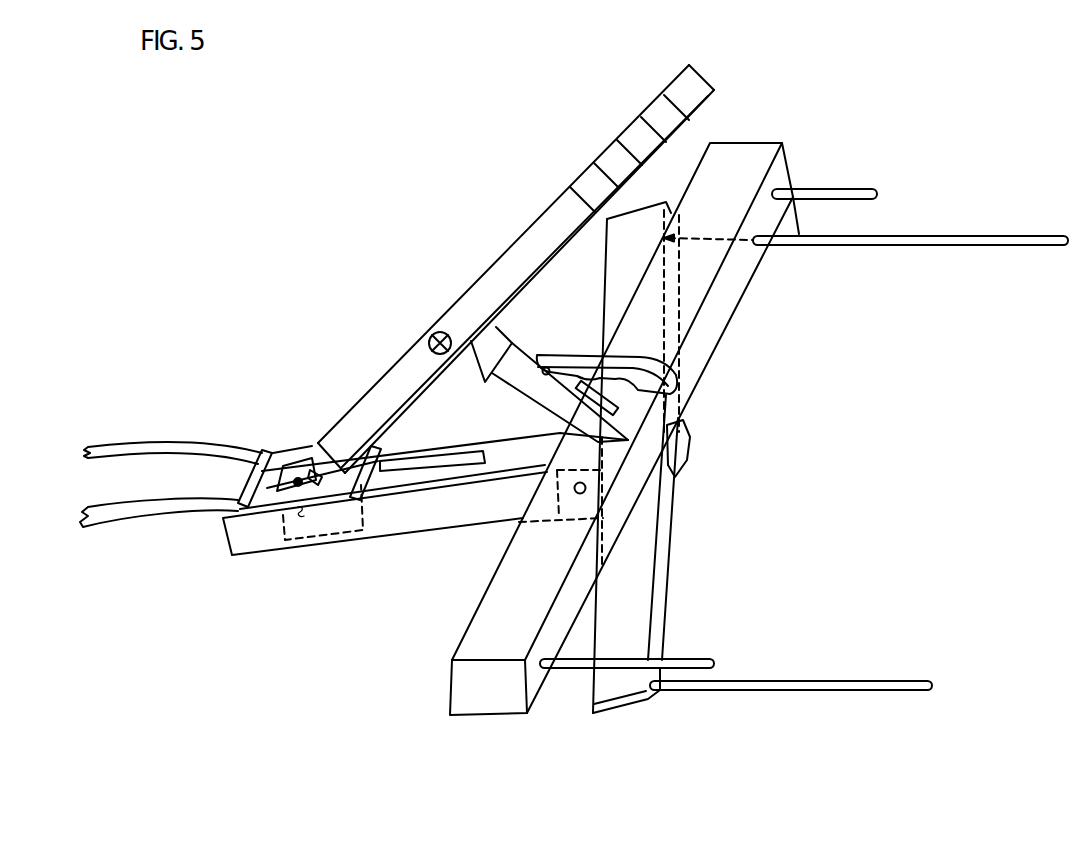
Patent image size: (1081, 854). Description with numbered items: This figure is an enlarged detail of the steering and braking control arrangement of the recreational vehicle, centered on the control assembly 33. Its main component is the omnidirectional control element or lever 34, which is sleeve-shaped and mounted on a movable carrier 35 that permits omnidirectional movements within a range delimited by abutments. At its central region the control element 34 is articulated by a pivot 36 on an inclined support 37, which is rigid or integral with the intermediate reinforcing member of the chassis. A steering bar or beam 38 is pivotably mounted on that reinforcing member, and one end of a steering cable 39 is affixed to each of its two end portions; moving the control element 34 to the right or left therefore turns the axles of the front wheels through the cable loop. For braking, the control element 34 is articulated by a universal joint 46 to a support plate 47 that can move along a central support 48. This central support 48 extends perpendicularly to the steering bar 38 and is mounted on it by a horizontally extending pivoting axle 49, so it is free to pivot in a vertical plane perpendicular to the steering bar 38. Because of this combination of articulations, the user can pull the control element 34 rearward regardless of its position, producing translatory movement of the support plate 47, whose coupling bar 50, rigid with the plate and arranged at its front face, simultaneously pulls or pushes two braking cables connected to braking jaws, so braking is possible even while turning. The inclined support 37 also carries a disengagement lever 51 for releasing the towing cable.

The control assembly 33 is at (756, 95).
The omnidirectional control element or lever 34 is at (537, 240).
The movable carrier 35 is at (373, 570).
The pivot 36 is at (438, 332).
The inclined support 37 is at (535, 355).
The steering bar or beam 38 is at (737, 187).
The steering cable 39 is at (832, 195).
The universal joint 46 is at (311, 468).
The support plate 47 is at (270, 519).
The central support 48 is at (453, 522).
The horizontally extending pivoting axle 49 is at (580, 494).
The coupling bar 50 is at (397, 444).
The disengagement lever 51 is at (604, 345).